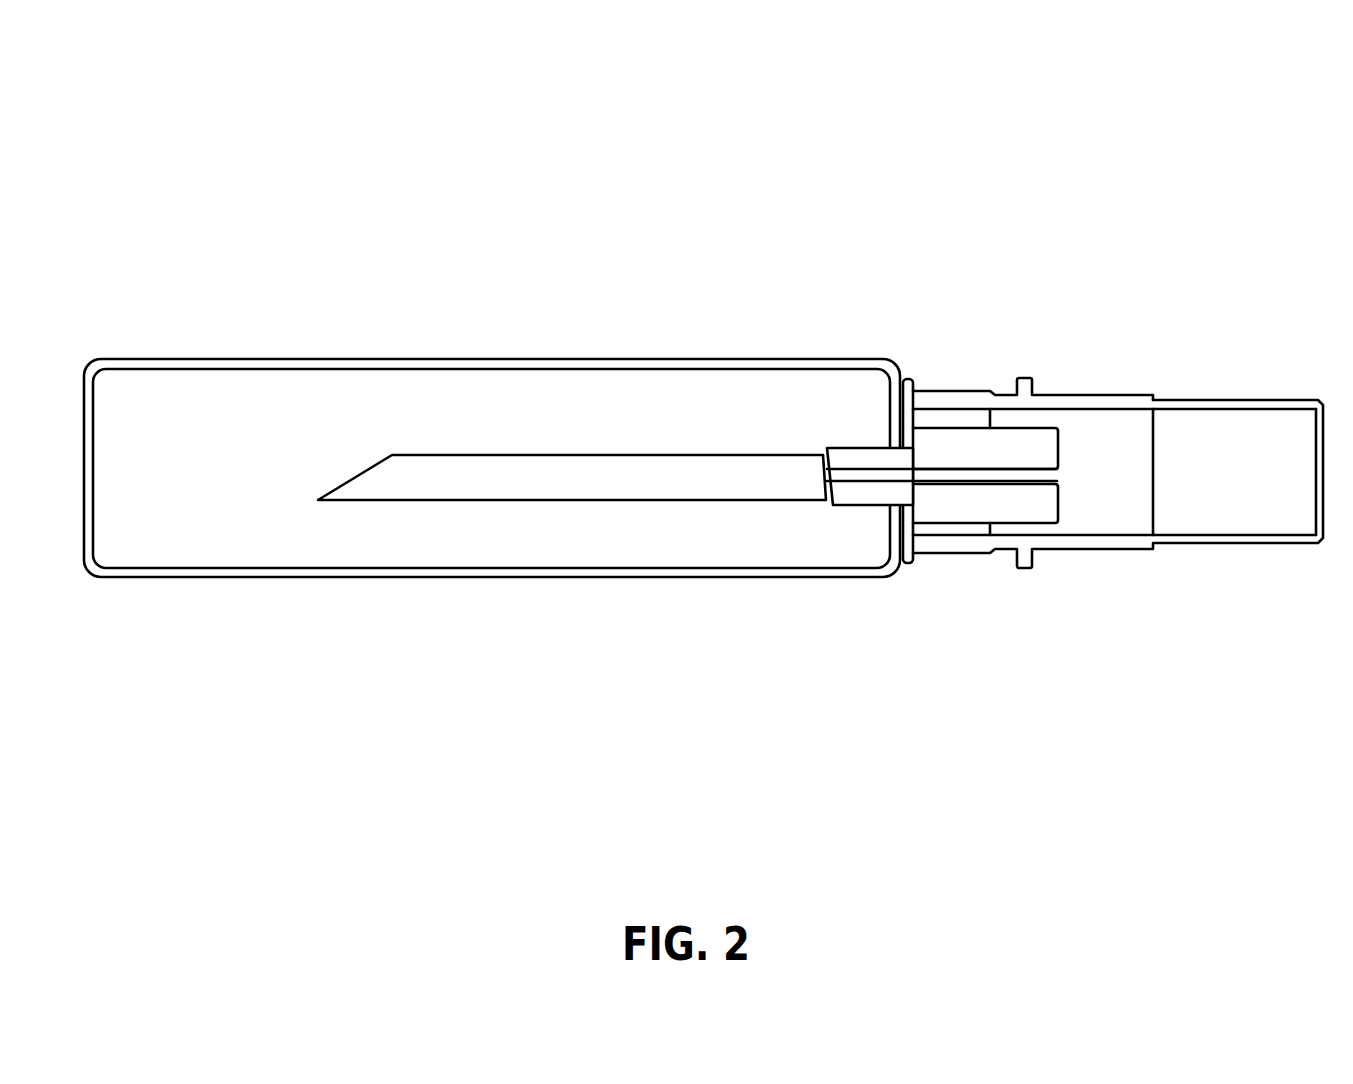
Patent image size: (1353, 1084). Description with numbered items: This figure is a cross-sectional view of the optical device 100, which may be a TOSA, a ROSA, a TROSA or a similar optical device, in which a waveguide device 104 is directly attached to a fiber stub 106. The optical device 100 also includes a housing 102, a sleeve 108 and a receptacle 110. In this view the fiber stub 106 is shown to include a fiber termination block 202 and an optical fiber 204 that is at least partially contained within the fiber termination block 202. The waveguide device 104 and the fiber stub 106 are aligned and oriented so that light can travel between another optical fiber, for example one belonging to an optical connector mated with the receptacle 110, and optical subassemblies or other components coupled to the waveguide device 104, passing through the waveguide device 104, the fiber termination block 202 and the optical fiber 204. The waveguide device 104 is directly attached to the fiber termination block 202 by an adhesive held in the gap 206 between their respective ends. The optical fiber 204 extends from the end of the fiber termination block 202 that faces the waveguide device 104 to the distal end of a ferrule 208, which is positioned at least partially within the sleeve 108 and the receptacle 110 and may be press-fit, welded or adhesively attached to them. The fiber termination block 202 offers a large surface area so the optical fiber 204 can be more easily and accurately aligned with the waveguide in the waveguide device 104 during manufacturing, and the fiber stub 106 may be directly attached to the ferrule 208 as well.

The optical device 100 is at (170, 66).
The housing 102 is at (235, 358).
The waveguide device 104 is at (448, 453).
The fiber stub 106 is at (677, 248).
The sleeve 108 is at (958, 553).
The receptacle 110 is at (1293, 400).
The fiber termination block 202 is at (880, 448).
The optical fiber 204 is at (938, 468).
The gap 206 is at (832, 520).
The ferrule 208 is at (1017, 523).